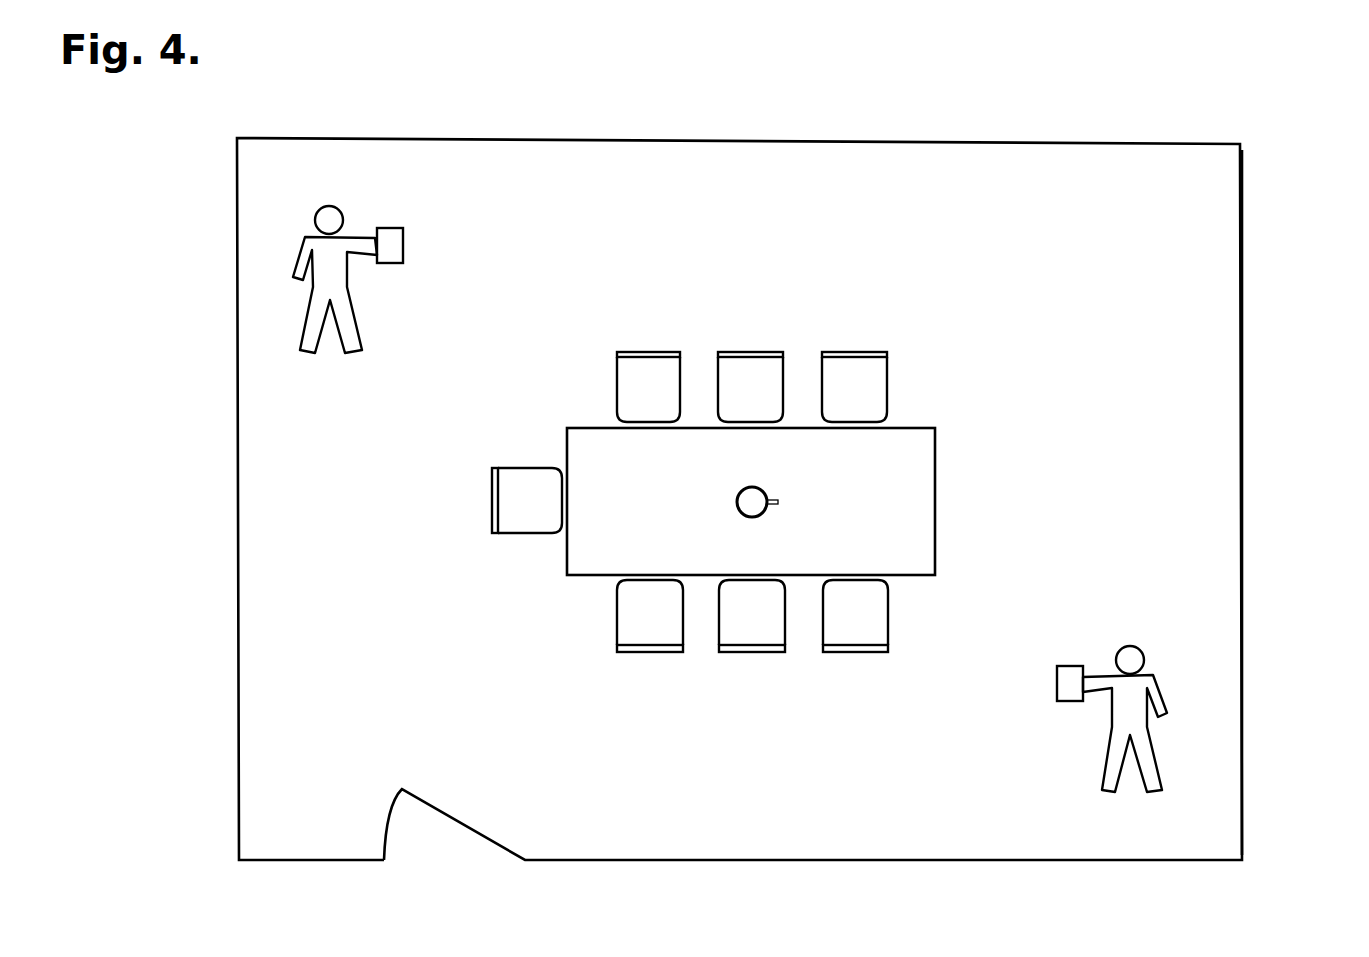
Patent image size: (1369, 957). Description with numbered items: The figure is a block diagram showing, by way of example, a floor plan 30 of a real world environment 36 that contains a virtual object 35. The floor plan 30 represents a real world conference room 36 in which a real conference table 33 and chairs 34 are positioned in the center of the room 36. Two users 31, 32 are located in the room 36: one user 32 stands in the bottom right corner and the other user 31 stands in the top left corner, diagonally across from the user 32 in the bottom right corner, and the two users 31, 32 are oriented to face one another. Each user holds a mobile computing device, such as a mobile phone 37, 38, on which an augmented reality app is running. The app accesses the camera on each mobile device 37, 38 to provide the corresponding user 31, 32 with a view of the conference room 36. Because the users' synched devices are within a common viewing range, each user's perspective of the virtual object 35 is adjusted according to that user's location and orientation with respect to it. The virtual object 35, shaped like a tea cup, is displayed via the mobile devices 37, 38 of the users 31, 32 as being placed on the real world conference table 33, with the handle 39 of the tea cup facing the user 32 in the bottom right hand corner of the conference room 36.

The floor plan 30 is at (764, 123).
The user 31 is at (293, 253).
The user 32 is at (1178, 712).
The conference table 33 is at (935, 461).
The chairs 34 is at (865, 350).
The virtual object 35 is at (735, 507).
The real world environment 36 is at (1241, 285).
The mobile phone 37 is at (387, 228).
The mobile phone 38 is at (1070, 701).
The handle 39 is at (778, 502).